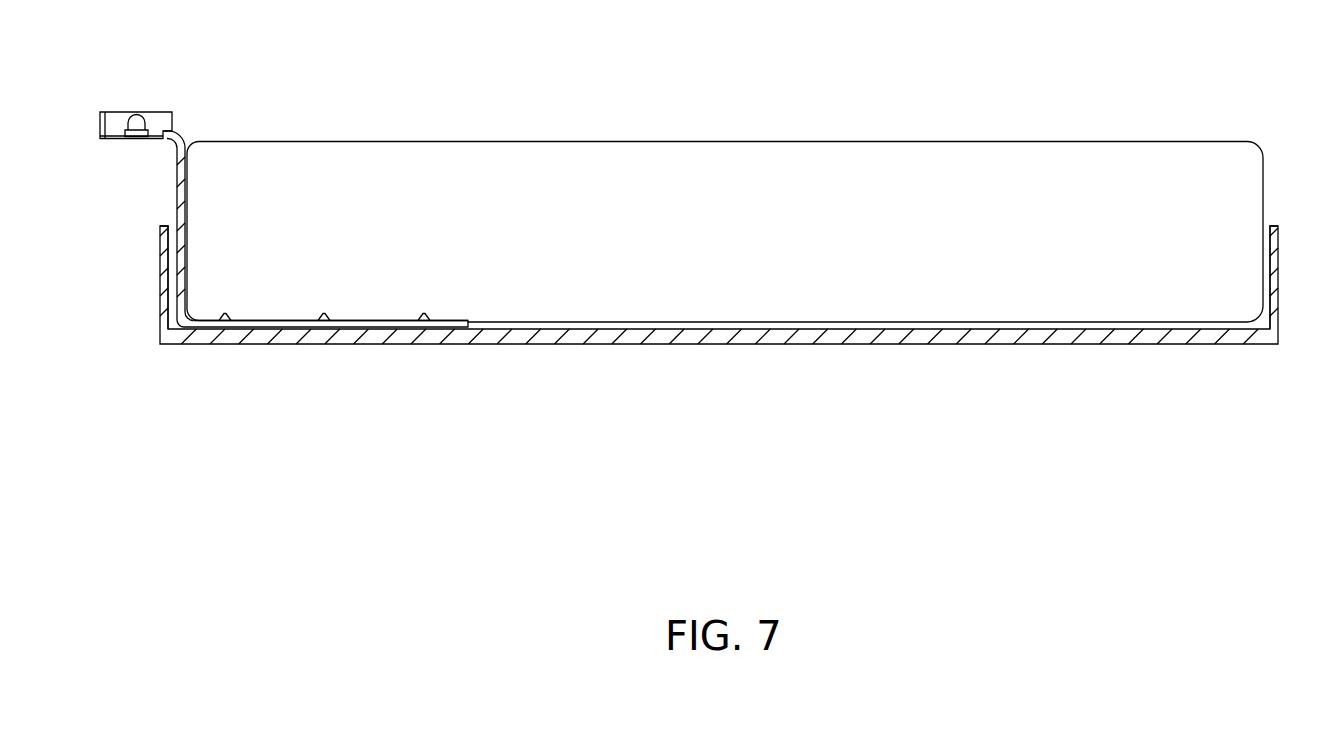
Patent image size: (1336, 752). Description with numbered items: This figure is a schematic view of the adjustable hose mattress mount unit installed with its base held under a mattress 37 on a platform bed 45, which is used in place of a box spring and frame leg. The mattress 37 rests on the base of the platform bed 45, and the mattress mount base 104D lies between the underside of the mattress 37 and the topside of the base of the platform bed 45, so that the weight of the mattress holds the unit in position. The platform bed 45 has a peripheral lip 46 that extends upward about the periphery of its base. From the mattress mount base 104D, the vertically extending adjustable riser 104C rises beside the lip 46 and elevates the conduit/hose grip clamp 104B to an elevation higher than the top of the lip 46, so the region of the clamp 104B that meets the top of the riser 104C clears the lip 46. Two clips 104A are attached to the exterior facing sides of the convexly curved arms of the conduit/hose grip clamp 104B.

The mattress 37 is at (648, 142).
The platform bed 45 is at (770, 344).
The peripheral lip 46 is at (158, 313).
The clips 104A is at (137, 115).
The conduit/hose grip clamp 104B is at (100, 132).
The adjustable riser 104C is at (177, 279).
The mattress mount base 104D is at (347, 330).